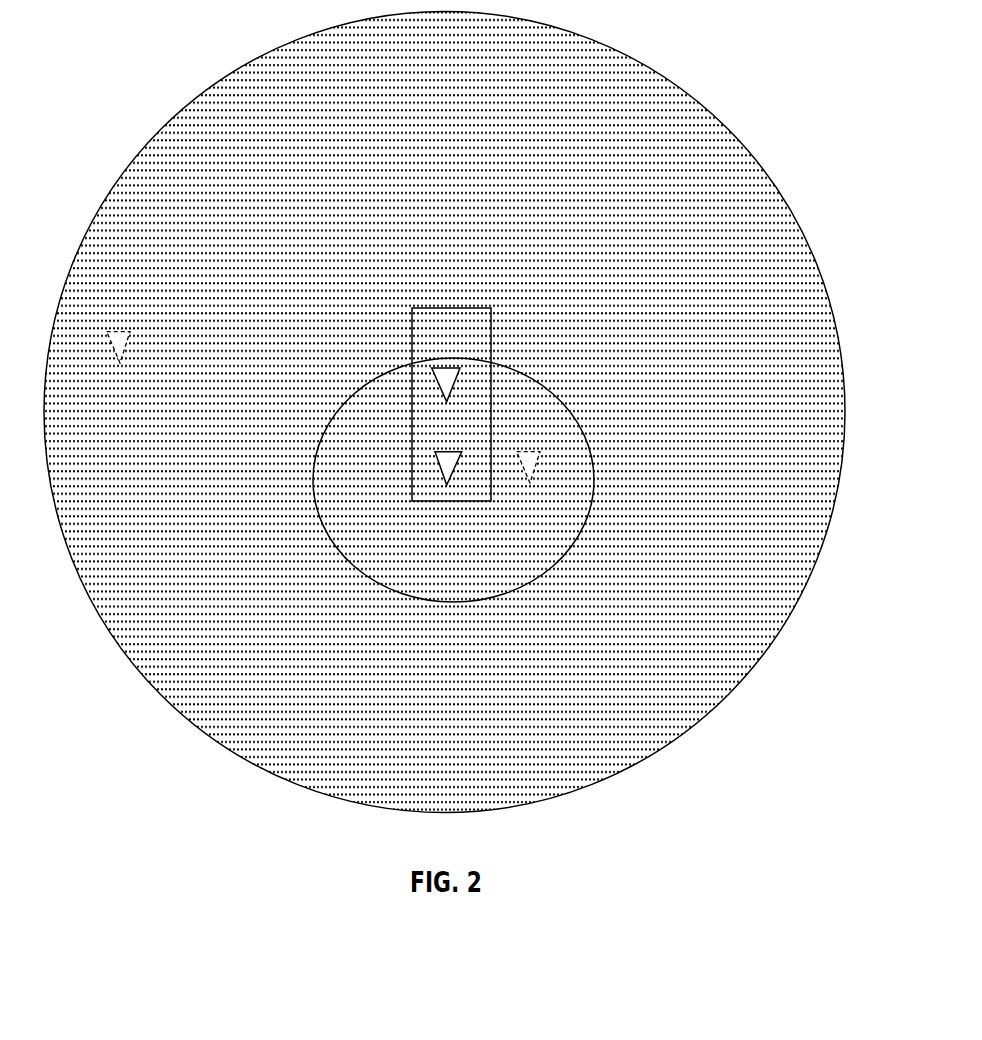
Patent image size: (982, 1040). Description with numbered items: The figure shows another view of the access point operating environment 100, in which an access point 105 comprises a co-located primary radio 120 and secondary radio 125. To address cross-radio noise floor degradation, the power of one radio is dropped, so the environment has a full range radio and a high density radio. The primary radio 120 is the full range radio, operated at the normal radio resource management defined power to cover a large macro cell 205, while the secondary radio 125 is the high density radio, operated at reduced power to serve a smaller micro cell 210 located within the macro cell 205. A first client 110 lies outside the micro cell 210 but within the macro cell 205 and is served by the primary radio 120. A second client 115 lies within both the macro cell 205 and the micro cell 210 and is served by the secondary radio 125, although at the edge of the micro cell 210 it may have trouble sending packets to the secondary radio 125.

The access point operating environment 100 is at (724, 49).
The macro cell 205 is at (735, 135).
The micro cell 210 is at (540, 382).
The access point 105 is at (450, 308).
The first client 110 is at (123, 332).
The second client 115 is at (532, 463).
The primary radio 120 is at (447, 387).
The secondary radio 125 is at (447, 468).